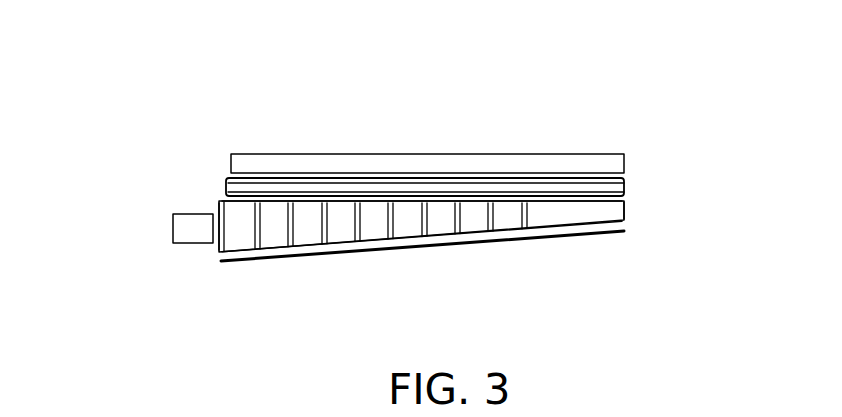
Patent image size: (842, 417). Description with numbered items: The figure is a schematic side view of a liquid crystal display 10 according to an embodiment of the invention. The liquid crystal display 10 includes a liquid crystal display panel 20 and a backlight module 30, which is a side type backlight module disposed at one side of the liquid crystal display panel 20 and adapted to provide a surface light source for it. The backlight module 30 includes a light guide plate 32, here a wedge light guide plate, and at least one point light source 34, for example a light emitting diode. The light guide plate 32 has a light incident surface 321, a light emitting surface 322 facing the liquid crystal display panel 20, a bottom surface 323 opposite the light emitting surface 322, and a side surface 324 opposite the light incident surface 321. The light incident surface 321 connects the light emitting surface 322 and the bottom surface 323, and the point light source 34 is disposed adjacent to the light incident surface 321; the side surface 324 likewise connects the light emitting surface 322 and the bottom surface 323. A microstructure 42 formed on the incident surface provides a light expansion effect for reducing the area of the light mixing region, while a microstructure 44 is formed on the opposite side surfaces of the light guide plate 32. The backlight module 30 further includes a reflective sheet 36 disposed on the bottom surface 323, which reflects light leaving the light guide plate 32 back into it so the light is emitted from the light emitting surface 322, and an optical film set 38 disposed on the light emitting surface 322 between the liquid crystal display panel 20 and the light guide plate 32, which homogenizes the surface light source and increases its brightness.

The liquid crystal display 10 is at (116, 56).
The liquid crystal display panel 20 is at (356, 154).
The backlight module 30 is at (70, 163).
The light guide plate 32 is at (420, 198).
The point light source 34 is at (173, 227).
The reflective sheet 36 is at (242, 261).
The optical film set 38 is at (227, 183).
The light incident surface 321 is at (217, 247).
The light emitting surface 322 is at (577, 203).
The bottom surface 323 is at (402, 243).
The side surface 324 is at (625, 212).
The microstructure 42 is at (227, 238).
The microstructure 44 is at (326, 242).